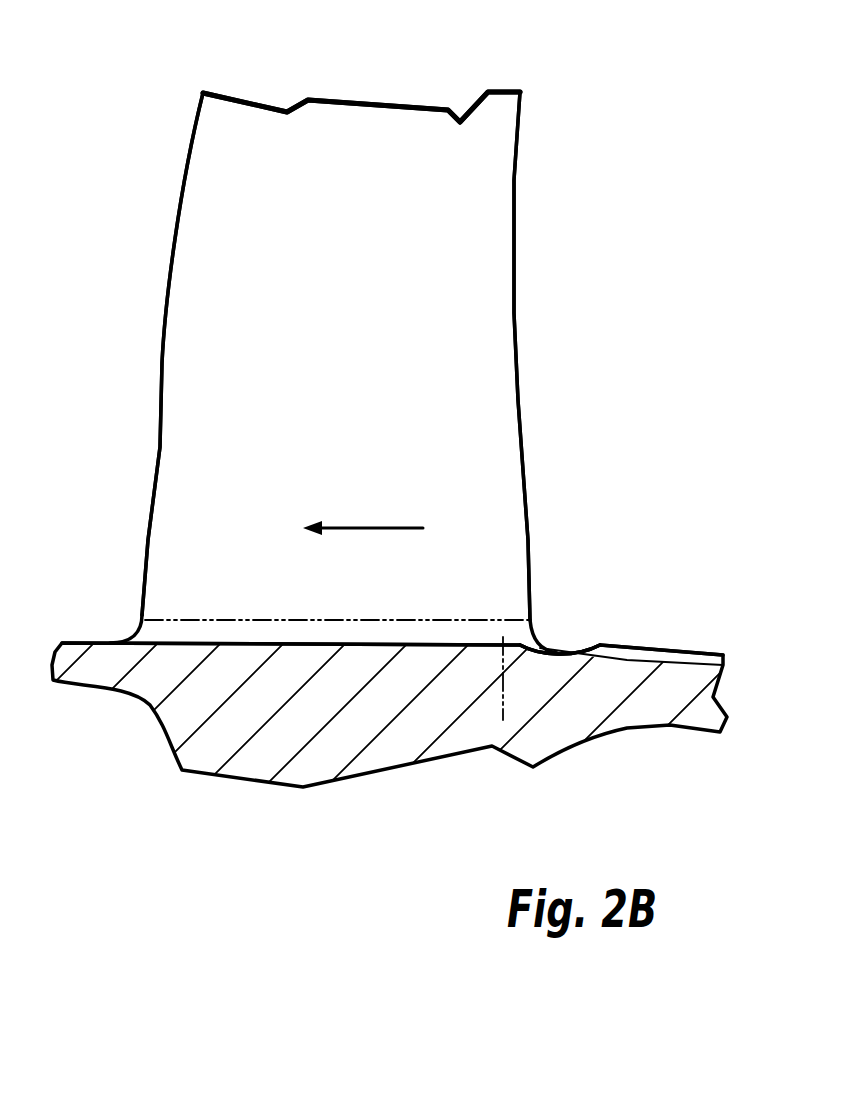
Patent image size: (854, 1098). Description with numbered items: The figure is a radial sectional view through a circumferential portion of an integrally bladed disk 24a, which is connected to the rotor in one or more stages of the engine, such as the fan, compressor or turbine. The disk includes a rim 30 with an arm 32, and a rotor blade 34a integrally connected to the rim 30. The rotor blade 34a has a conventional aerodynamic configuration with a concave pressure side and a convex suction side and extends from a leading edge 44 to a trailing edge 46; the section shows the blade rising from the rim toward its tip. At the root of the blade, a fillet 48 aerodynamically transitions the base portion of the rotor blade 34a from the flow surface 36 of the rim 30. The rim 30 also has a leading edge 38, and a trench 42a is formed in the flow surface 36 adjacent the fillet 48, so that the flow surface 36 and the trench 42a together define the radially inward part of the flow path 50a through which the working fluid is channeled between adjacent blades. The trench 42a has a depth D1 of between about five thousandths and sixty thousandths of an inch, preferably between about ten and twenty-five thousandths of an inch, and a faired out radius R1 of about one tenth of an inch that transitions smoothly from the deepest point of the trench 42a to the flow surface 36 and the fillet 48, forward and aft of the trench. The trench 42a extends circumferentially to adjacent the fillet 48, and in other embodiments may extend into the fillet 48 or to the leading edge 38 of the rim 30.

The integrally bladed disk 24a is at (168, 119).
The rotor blade 34a is at (418, 107).
The trailing edge 46 is at (160, 363).
The leading edge 44 is at (518, 400).
The flow path 50a is at (363, 528).
The arm 32 is at (712, 653).
The rim 30 is at (288, 727).
The flow surface 36 is at (245, 643).
The fillet 48 is at (535, 627).
The trench 42a is at (566, 618).
The leading edge of the rim 38 is at (610, 648).
The faired out radius R1 is at (512, 655).
The depth D1 is at (585, 617).